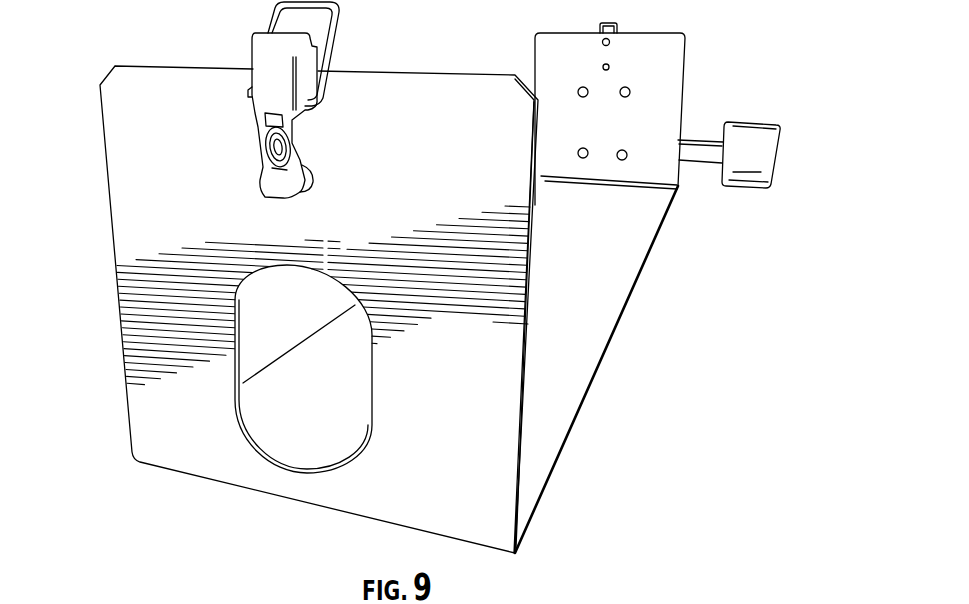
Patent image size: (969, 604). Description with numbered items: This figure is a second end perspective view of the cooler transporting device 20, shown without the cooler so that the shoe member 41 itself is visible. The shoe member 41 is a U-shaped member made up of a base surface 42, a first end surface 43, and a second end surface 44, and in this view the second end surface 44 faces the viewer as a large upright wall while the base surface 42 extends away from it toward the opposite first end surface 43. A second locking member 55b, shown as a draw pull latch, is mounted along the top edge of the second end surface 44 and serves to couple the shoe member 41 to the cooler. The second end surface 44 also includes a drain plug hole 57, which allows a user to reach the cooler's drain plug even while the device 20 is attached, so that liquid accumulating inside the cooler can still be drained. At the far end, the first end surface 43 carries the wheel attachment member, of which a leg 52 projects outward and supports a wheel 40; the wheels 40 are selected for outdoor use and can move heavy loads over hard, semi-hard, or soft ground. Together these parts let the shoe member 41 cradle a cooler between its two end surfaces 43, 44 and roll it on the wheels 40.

The cooler transporting device 20 is at (66, 352).
The wheel 40 is at (753, 178).
The shoe member 41 is at (603, 416).
The base surface 42 is at (598, 293).
The first end surface 43 is at (667, 95).
The second end surface 44 is at (130, 130).
The leg 52 is at (698, 152).
The second locking member 55b is at (265, 77).
The drain plug hole 57 is at (282, 310).